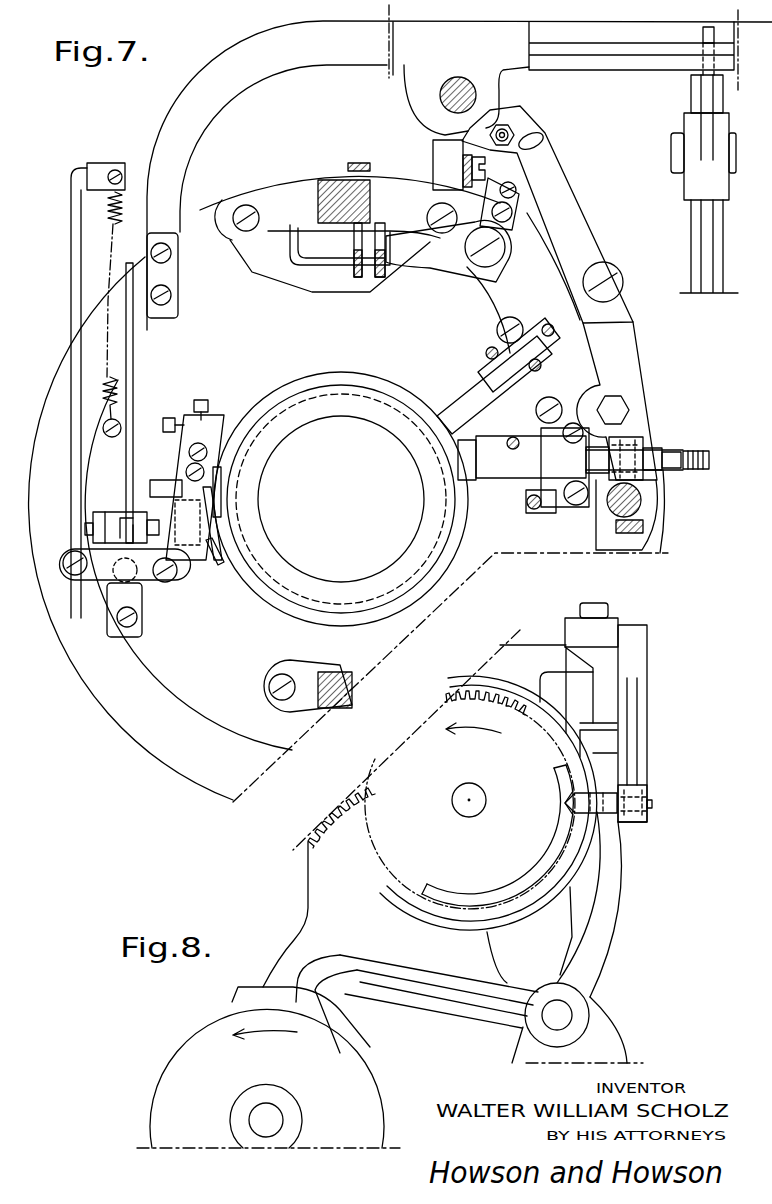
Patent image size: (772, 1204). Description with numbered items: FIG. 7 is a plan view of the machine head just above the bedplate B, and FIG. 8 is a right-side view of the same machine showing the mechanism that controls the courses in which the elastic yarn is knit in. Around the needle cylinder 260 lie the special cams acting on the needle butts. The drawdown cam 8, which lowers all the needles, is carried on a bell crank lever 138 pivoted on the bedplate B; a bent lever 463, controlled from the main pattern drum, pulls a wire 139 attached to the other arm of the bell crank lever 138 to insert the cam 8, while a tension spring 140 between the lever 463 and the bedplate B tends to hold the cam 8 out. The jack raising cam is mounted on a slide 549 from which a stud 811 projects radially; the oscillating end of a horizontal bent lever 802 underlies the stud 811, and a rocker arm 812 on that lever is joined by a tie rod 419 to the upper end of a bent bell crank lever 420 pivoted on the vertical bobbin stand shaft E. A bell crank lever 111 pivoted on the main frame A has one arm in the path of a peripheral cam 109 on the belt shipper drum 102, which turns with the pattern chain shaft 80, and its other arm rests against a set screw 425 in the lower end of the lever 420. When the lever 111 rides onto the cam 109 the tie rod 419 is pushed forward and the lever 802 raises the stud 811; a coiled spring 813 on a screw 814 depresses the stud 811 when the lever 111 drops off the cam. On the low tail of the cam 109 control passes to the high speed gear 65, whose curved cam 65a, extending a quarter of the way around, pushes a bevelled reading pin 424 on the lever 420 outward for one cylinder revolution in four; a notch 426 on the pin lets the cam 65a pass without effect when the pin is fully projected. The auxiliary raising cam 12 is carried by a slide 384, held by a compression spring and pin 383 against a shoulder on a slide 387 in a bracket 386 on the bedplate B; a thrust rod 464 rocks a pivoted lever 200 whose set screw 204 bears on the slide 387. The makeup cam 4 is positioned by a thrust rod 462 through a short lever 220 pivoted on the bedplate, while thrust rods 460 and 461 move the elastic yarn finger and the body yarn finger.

In FIG. 7, the makeup cam 4 is at (465, 410).
In FIG. 7, the drawdown cam 8 is at (228, 453).
In FIG. 7, the auxiliary raising cam 12 is at (468, 453).
In FIG. 8, the high speed gear 65 is at (413, 826).
In FIG. 8, the curved cam 65a is at (547, 843).
In FIG. 8, the pattern chain shaft 80 is at (258, 1114).
In FIG. 8, the belt shipper drum 102 is at (207, 1045).
In FIG. 8, the peripheral cam 109 is at (362, 1043).
In FIG. 7, the bell crank lever 111 is at (700, 222).
In FIG. 8, the bell crank lever 111 is at (606, 888).
In FIG. 7, the bell crank lever 138 is at (90, 568).
In FIG. 7, the wire 139 is at (77, 367).
In FIG. 7, the tension spring 140 is at (110, 215).
In FIG. 7, the pivoted lever 200 is at (553, 212).
In FIG. 7, the set screw 204 is at (692, 451).
In FIG. 7, the short lever 220 is at (438, 252).
In FIG. 7, the needle cylinder 260 is at (278, 572).
In FIG. 7, the compression spring and pin 383 is at (626, 450).
In FIG. 7, the slide 384 is at (592, 448).
In FIG. 7, the bracket 386 is at (565, 490).
In FIG. 7, the slide 387 is at (530, 486).
In FIG. 7, the tie rod 419 is at (133, 385).
In FIG. 7, the bent bell crank lever 420 is at (315, 52).
In FIG. 8, the bent bell crank lever 420 is at (640, 690).
In FIG. 8, the reading pin 424 is at (603, 806).
In FIG. 7, the set screw 425 is at (697, 42).
In FIG. 8, the set screw 425 is at (651, 806).
In FIG. 8, the notch 426 is at (568, 795).
In FIG. 7, the thrust rod 460 is at (355, 162).
In FIG. 7, the thrust rod 461 is at (352, 275).
In FIG. 7, the thrust rod 462 is at (376, 277).
In FIG. 7, the bent lever 463 is at (100, 165).
In FIG. 7, the thrust rod 464 is at (462, 175).
In FIG. 7, the slide 549 is at (223, 498).
In FIG. 7, the bent lever 802 is at (110, 530).
In FIG. 7, the stud 811 is at (163, 487).
In FIG. 7, the rocker arm 812 is at (137, 530).
In FIG. 7, the coiled spring 813 is at (219, 550).
In FIG. 7, the screw 814 is at (212, 528).
In FIG. 8, the main frame A is at (318, 915).
In FIG. 7, the bedplate B is at (135, 718).
In FIG. 7, the vertical bobbin stand shaft E is at (462, 79).